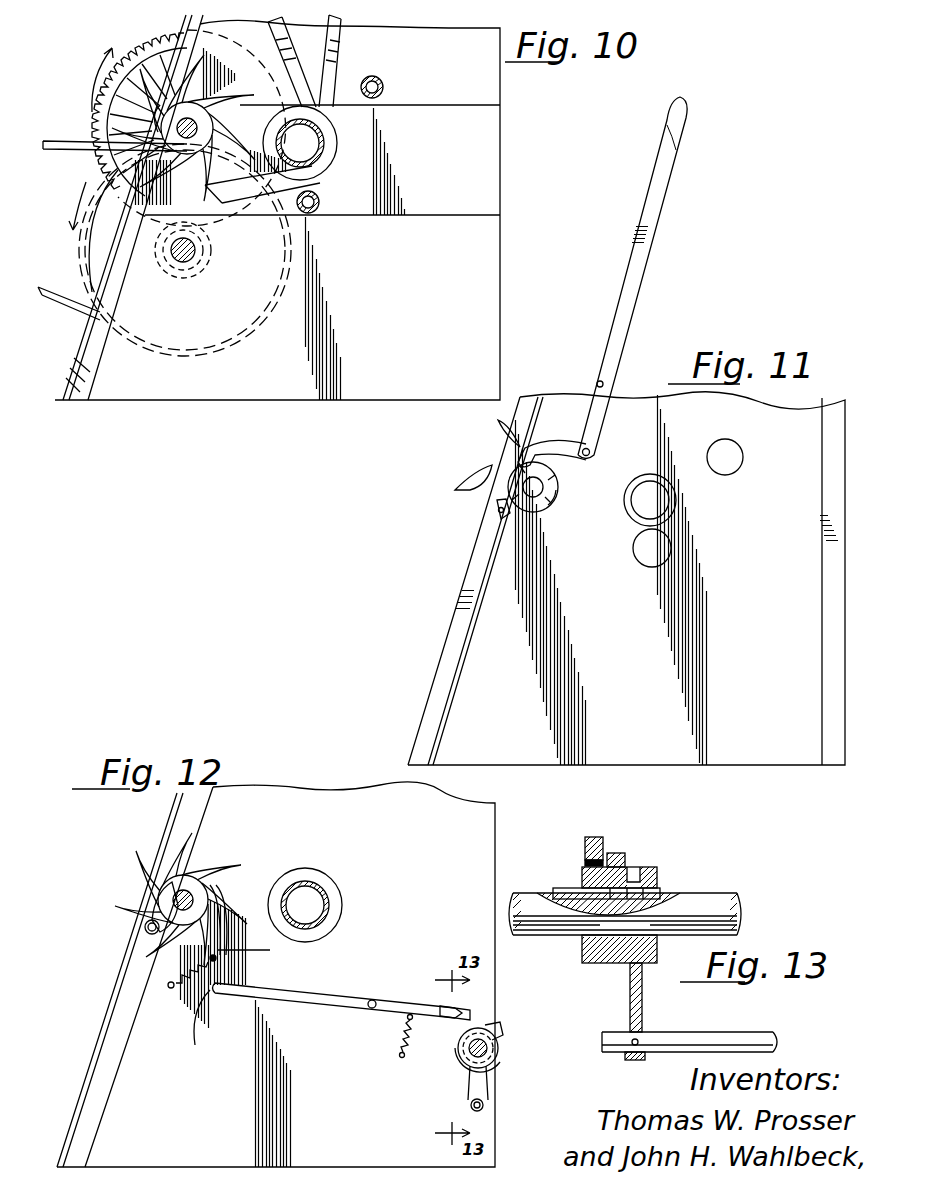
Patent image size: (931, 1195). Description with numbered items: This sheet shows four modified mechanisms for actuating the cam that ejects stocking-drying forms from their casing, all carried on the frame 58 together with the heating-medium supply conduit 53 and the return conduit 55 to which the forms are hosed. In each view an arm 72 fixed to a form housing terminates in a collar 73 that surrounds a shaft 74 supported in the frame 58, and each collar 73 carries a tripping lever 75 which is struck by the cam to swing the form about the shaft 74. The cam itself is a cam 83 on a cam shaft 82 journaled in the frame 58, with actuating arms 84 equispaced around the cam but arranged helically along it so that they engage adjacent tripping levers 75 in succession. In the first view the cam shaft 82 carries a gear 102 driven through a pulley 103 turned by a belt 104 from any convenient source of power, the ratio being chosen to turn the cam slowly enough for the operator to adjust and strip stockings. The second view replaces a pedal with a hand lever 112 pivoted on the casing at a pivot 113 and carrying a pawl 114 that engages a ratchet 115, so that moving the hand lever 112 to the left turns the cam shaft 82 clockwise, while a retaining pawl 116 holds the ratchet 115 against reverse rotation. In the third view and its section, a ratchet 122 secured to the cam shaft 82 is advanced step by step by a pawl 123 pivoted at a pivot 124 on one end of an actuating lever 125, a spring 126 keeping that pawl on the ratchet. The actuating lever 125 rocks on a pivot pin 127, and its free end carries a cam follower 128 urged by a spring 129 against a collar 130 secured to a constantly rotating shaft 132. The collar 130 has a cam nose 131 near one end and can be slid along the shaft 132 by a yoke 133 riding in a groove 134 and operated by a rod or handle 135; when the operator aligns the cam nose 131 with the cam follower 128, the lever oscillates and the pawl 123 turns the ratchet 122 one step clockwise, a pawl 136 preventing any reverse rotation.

In FIG. 10, the conduit 53 is at (383, 85).
In FIG. 11, the conduit 53 is at (745, 457).
In FIG. 10, the return conduit 55 is at (320, 202).
In FIG. 11, the return conduit 55 is at (672, 549).
In FIG. 12, the frame 58 is at (497, 845).
In FIG. 10, the arm 72 is at (342, 42).
In FIG. 10, the collar 73 is at (337, 131).
In FIG. 12, the collar 73 is at (341, 917).
In FIG. 10, the shaft 74 is at (325, 146).
In FIG. 11, the shaft 74 is at (676, 500).
In FIG. 12, the shaft 74 is at (329, 897).
In FIG. 10, the tripping lever 75 is at (325, 187).
In FIG. 10, the cam shaft 82 is at (200, 123).
In FIG. 11, the cam shaft 82 is at (541, 489).
In FIG. 12, the cam shaft 82 is at (195, 898).
In FIG. 10, the cam 83 is at (160, 118).
In FIG. 12, the cam 83 is at (165, 888).
In FIG. 10, the actuating arms 84 is at (224, 73).
In FIG. 11, the actuating arms 84 is at (463, 484).
In FIG. 12, the actuating arms 84 is at (222, 846).
In FIG. 10, the gear 102 is at (100, 108).
In FIG. 10, the pulley 103 is at (92, 250).
In FIG. 10, the belt 104 is at (92, 147).
In FIG. 11, the hand lever 112 is at (612, 320).
In FIG. 11, the pivot 113 is at (603, 389).
In FIG. 11, the pawl 114 is at (522, 452).
In FIG. 11, the ratchet 115 is at (550, 504).
In FIG. 11, the retaining pawl 116 is at (498, 509).
In FIG. 12, the ratchet 122 is at (150, 921).
In FIG. 12, the pawl 123 is at (218, 958).
In FIG. 12, the pivot 124 is at (208, 1012).
In FIG. 12, the actuating lever 125 is at (288, 994).
In FIG. 13, the actuating lever 125 is at (585, 848).
In FIG. 12, the spring 126 is at (183, 992).
In FIG. 12, the pivot pin 127 is at (378, 1000).
In FIG. 12, the cam follower 128 is at (456, 1008).
In FIG. 13, the cam follower 128 is at (585, 863).
In FIG. 12, the spring 129 is at (398, 1032).
In FIG. 13, the collar 130 is at (657, 872).
In FIG. 12, the cam nose 131 is at (490, 1026).
In FIG. 13, the cam nose 131 is at (616, 853).
In FIG. 12, the shaft 132 is at (480, 1048).
In FIG. 13, the shaft 132 is at (695, 893).
In FIG. 12, the yoke 133 is at (456, 1062).
In FIG. 13, the yoke 133 is at (643, 992).
In FIG. 12, the groove 134 is at (490, 1065).
In FIG. 13, the groove 134 is at (636, 868).
In FIG. 12, the rod or handle 135 is at (470, 1105).
In FIG. 13, the rod or handle 135 is at (680, 1032).
In FIG. 12, the pawl 136 is at (146, 932).